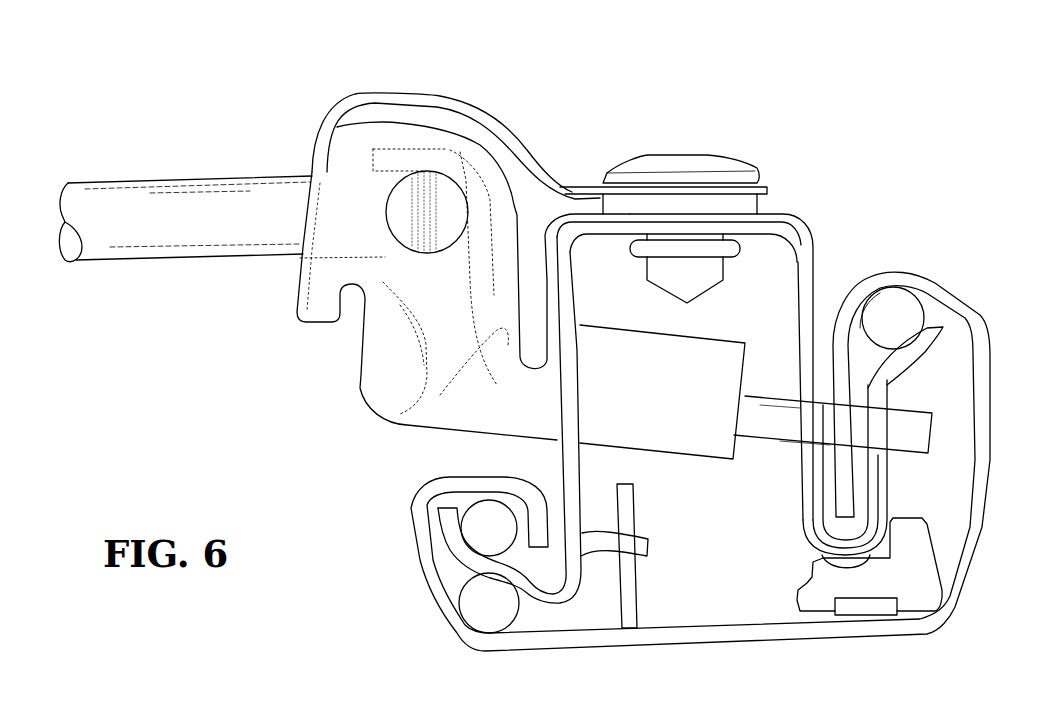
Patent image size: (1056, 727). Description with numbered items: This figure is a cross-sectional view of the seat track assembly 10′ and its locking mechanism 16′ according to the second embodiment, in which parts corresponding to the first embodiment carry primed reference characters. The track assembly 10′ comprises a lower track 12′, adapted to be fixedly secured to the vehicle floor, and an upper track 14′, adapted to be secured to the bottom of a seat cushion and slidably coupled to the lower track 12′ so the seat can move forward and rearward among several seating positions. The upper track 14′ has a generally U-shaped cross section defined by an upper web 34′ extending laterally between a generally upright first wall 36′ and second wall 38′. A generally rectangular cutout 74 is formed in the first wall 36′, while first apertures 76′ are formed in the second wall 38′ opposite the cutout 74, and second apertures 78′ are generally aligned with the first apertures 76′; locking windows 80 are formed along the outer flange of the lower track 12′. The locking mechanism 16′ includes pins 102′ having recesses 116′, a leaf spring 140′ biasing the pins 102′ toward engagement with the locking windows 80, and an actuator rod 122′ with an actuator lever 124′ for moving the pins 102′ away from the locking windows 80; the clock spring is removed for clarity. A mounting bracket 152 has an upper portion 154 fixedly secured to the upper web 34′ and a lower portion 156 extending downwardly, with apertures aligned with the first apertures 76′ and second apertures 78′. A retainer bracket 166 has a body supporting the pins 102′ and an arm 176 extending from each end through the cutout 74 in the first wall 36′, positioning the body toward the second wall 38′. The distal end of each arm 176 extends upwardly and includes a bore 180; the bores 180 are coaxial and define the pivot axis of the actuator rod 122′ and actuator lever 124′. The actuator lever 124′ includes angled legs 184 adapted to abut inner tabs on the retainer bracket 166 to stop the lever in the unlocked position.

The track assembly 10′ is at (957, 162).
The lower track 12′ is at (950, 620).
The upper track 14′ is at (699, 373).
The locking mechanism 16′ is at (206, 352).
The upper web 34′ is at (747, 217).
The first wall 36′ is at (567, 280).
The second wall 38′ is at (812, 260).
The cutout 74 is at (572, 447).
The first apertures 76′ is at (817, 403).
The second apertures 78′ is at (870, 407).
The locking windows 80 is at (800, 447).
The pins 102′ is at (760, 436).
The recesses 116′ is at (830, 407).
The actuator rod 122′ is at (133, 190).
The actuator lever 124′ is at (453, 163).
The leaf spring 140′ is at (447, 98).
The mounting bracket 152 is at (703, 200).
The upper portion 154 is at (577, 187).
The lower portion 156 is at (540, 333).
The retainer bracket 166 is at (363, 370).
The arm 176 is at (667, 455).
The bore 180 is at (387, 193).
The angled legs 184 is at (447, 397).